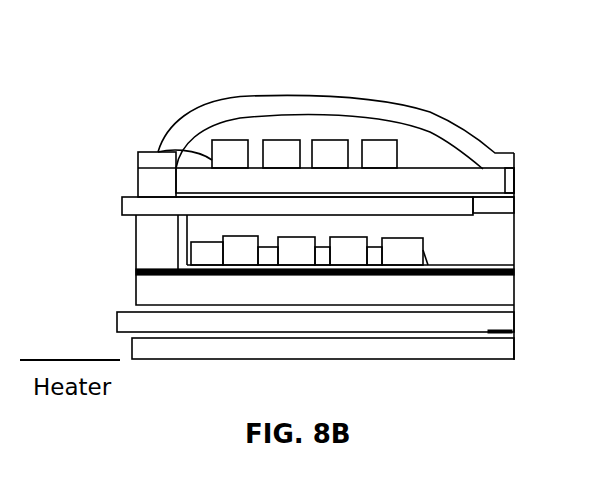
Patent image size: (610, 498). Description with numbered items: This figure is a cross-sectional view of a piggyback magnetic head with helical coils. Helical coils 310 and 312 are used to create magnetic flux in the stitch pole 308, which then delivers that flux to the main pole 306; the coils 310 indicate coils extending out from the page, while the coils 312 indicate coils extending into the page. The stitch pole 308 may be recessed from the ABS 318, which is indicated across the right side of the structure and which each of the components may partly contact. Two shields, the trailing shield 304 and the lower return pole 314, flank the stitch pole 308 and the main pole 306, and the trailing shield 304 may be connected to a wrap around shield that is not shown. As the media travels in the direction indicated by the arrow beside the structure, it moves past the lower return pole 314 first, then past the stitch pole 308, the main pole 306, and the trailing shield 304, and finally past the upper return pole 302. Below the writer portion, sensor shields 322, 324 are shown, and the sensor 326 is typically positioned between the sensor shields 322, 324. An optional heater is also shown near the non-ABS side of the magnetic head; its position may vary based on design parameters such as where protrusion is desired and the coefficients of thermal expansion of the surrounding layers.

The upper return pole 302 is at (452, 125).
The trailing shield 304 is at (515, 180).
The main pole 306 is at (515, 203).
The stitch pole 308 is at (462, 215).
The helical coils 310 is at (158, 152).
The helical coils 312 is at (225, 237).
The lower return pole 314 is at (360, 299).
The ABS 318 is at (524, 278).
The sensor shield 322 is at (118, 314).
The sensor shield 324 is at (132, 346).
The sensor 326 is at (512, 331).